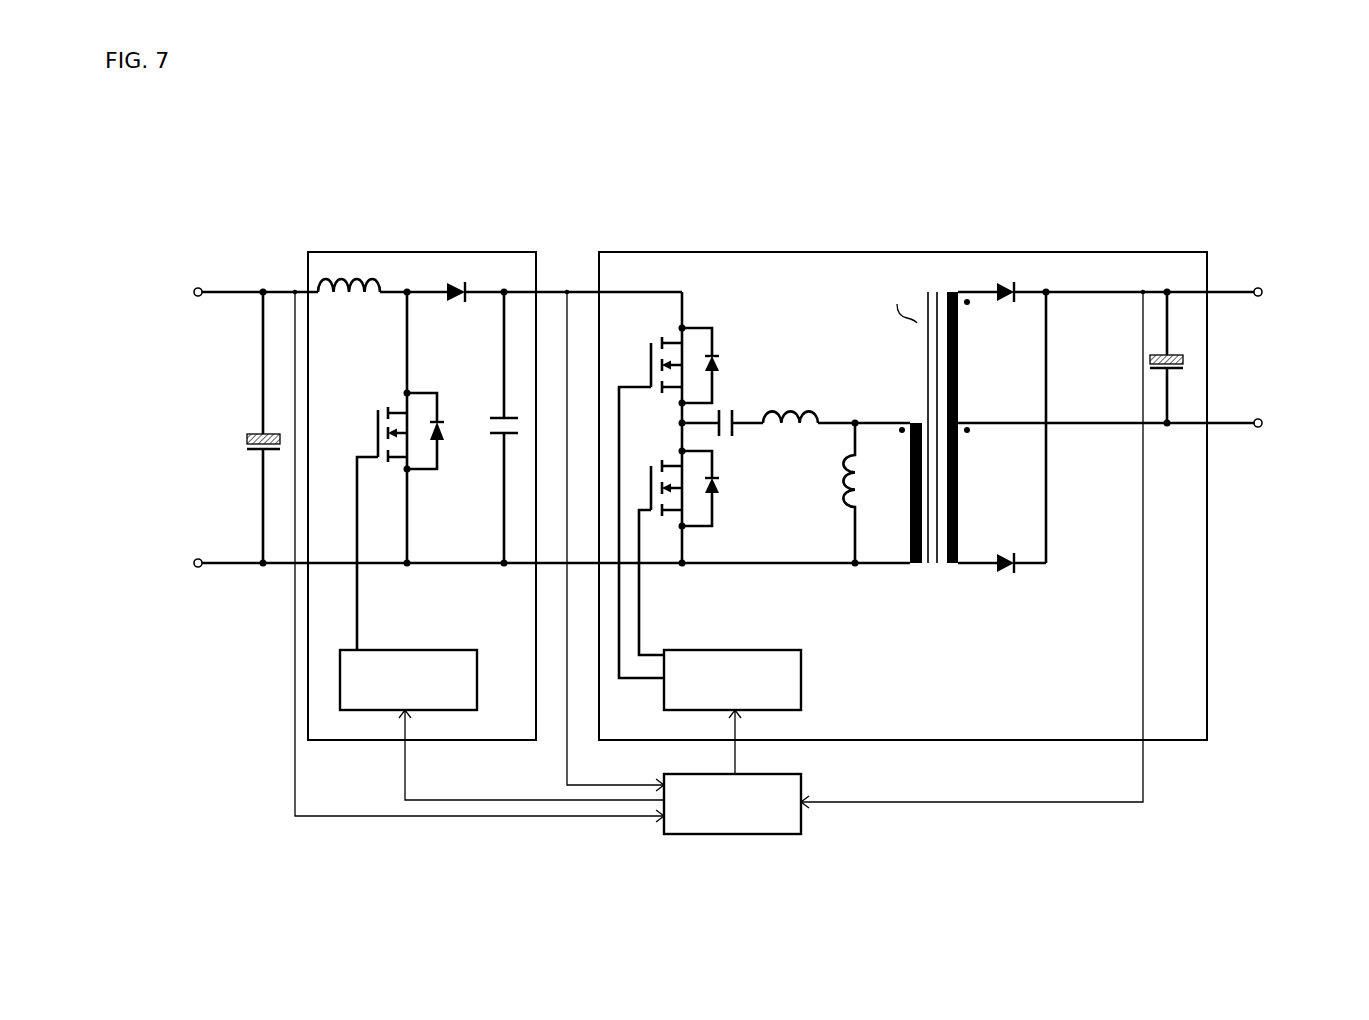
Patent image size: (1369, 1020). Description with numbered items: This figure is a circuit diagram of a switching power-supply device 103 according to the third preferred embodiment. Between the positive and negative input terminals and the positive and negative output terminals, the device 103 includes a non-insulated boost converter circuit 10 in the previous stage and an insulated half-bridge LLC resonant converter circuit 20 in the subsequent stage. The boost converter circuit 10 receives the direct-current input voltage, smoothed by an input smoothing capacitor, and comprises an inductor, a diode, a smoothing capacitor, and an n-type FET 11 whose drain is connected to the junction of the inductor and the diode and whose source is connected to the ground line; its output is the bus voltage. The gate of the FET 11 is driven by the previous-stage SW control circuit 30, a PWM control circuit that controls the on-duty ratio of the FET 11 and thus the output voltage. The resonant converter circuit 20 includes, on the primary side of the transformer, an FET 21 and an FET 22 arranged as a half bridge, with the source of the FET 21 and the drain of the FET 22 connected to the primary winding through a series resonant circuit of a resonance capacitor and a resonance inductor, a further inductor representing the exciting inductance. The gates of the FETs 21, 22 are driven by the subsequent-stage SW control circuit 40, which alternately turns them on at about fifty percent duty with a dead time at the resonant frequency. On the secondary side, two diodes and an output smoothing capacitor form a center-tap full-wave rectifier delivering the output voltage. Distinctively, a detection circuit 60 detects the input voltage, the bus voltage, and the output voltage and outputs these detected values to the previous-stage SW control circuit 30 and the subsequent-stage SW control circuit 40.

The switching power-supply device 103 is at (245, 217).
The boost converter circuit 10 is at (308, 252).
The FET 11 is at (400, 517).
The resonant converter circuit 20 is at (599, 252).
The FET 21 is at (669, 498).
The FET 22 is at (676, 539).
The previous-stage SW control circuit 30 is at (477, 657).
The subsequent-stage SW control circuit 40 is at (801, 655).
The detection circuit 60 is at (801, 785).